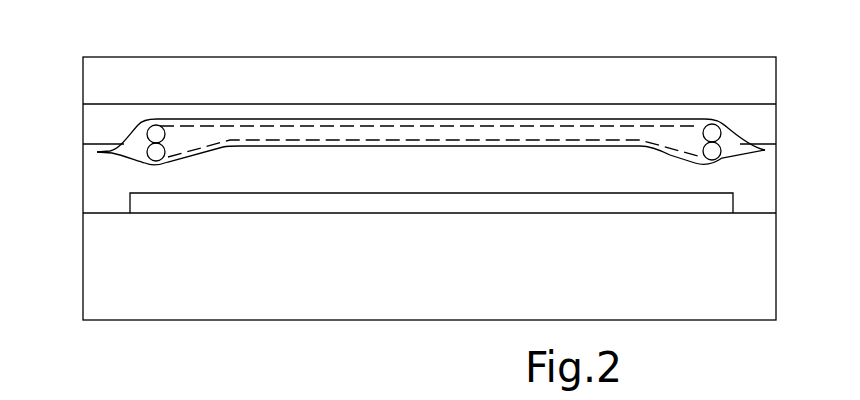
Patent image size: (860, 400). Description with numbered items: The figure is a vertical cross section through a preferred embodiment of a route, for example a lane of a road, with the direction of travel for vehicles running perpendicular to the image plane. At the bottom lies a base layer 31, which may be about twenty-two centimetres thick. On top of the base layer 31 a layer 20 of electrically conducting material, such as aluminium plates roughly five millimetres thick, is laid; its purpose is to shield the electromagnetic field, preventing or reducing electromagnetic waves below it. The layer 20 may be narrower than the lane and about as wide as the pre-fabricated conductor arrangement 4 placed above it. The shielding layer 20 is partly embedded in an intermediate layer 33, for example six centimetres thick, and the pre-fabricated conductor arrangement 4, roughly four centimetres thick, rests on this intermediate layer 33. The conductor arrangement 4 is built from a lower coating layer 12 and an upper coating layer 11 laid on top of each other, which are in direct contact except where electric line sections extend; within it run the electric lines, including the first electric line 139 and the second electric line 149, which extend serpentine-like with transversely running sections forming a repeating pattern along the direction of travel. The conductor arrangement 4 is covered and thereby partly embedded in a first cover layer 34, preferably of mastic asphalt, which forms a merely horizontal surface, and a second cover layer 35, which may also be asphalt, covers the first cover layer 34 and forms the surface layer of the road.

The pre-fabricated conductor arrangement 4 is at (329, 119).
The upper coating layer 11 is at (568, 119).
The lower coating layer 12 is at (500, 145).
The layer of electrically conducting material 20 is at (470, 202).
The base layer 31 is at (762, 280).
The intermediate layer 33 is at (752, 195).
The first cover layer 34 is at (765, 125).
The second cover layer 35 is at (763, 81).
The first electric line 139 is at (157, 151).
The second electric line 149 is at (153, 136).